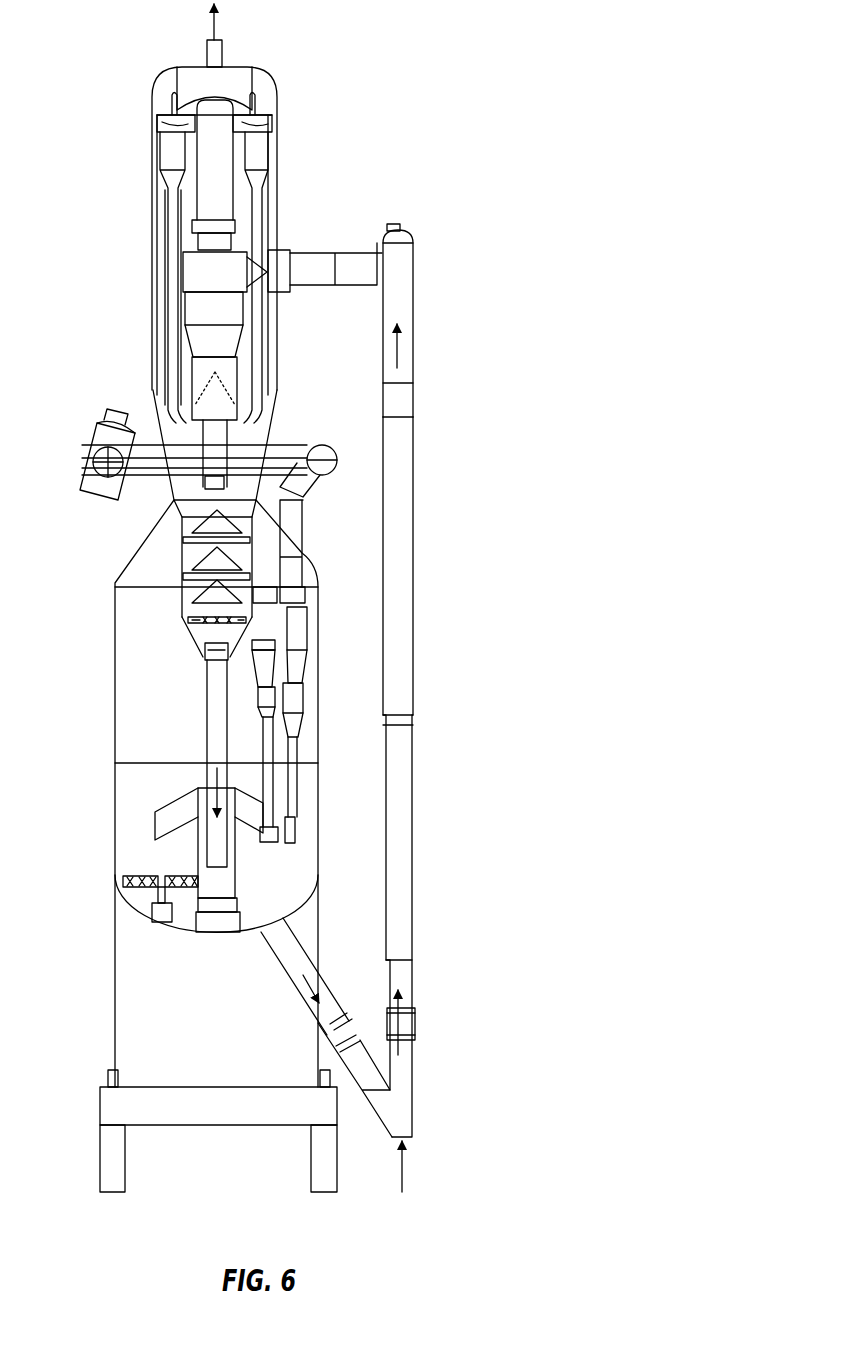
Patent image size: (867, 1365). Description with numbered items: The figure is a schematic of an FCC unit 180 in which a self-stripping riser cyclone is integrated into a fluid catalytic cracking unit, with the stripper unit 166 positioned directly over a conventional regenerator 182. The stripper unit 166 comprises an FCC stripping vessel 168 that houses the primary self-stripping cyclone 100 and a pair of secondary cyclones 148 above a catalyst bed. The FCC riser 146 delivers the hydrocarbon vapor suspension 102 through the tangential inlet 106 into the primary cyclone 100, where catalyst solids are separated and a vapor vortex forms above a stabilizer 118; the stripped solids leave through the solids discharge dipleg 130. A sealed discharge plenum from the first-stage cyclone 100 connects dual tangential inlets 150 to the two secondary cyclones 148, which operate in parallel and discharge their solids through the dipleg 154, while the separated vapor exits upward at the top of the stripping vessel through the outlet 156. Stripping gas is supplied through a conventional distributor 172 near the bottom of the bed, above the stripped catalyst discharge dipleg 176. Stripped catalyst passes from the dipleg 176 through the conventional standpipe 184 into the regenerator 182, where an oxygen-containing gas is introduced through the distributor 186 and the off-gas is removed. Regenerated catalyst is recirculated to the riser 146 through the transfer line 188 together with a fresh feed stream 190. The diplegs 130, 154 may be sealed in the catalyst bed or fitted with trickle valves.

The self-stripping cyclone 100 is at (237, 287).
The hydrocarbon vapor suspension 102 is at (410, 358).
The tangential inlet 106 is at (282, 253).
The stabilizer 118 is at (228, 395).
The solids discharge dipleg 130 is at (312, 495).
The FCC riser 146 is at (417, 430).
The secondary cyclone 148 is at (177, 153).
The tangential inlet 150 is at (180, 123).
The solids discharge dipleg 154 is at (170, 315).
The gas outlet 156 is at (212, 30).
The stripper unit 166 is at (115, 168).
The FCC stripping vessel 168 is at (152, 363).
The distributor 172 is at (193, 633).
The stripped catalyst discharge dipleg 176 is at (203, 702).
The FCC unit 180 is at (443, 127).
The regenerator 182 is at (113, 670).
The standpipe 184 is at (197, 840).
The distributor 186 is at (140, 887).
The transfer line 188 is at (290, 970).
The fresh feed stream 190 is at (405, 1170).